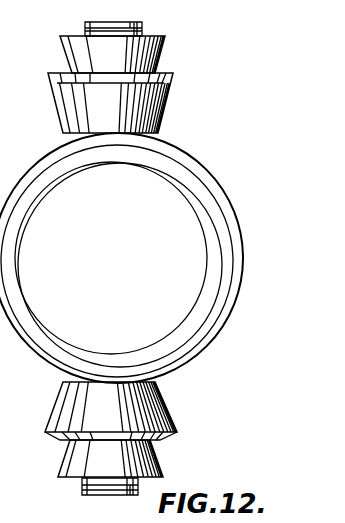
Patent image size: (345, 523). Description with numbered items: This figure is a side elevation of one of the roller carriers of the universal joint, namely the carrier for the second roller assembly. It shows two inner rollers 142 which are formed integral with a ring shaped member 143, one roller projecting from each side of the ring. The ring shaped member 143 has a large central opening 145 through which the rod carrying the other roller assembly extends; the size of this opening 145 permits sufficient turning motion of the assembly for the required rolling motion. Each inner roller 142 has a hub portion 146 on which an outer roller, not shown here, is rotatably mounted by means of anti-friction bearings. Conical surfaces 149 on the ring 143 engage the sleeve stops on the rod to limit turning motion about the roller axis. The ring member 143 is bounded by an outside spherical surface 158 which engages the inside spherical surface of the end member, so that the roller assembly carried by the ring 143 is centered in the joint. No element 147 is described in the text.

The inner rollers 142 is at (168, 108).
The ring shaped member 143 is at (200, 170).
The central opening 145 is at (187, 235).
The hub portions 146 is at (158, 60).
The bolt head 147 is at (112, 258).
The conical surfaces 149 is at (157, 163).
The outside spherical surface 158 is at (200, 350).